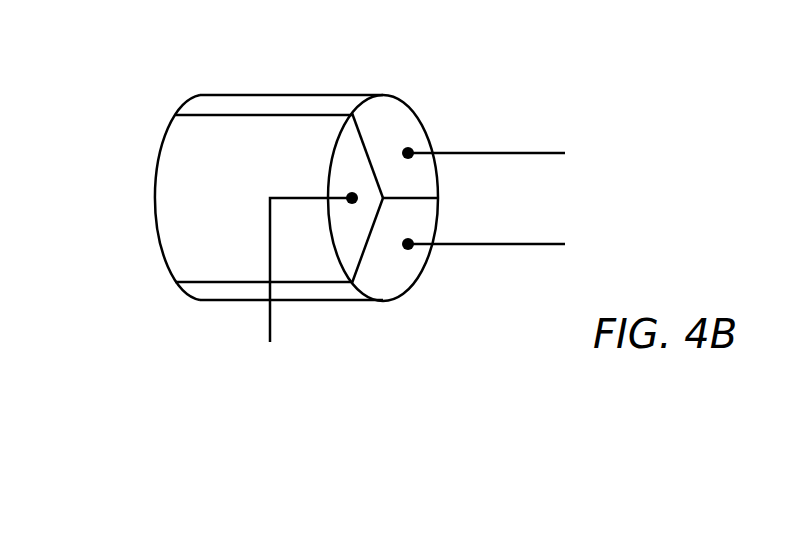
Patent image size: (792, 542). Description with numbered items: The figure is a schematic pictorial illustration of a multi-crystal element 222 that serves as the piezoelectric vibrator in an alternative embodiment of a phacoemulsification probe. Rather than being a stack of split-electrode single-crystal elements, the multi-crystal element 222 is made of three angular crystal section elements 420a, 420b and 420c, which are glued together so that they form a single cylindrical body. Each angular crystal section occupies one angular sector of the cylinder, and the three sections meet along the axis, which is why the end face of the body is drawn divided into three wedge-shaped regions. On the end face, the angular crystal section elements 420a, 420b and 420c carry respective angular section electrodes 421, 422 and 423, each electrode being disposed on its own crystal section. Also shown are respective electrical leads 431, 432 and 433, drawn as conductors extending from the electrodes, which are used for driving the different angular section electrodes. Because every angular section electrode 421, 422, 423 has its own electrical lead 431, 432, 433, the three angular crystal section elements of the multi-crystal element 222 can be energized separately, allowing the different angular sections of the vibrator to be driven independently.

The multi-crystal element 222 is at (643, 183).
The angular crystal section element 420a is at (270, 102).
The angular crystal section element 420b is at (323, 295).
The angular crystal section element 420c is at (157, 215).
The angular section electrode 421 is at (401, 112).
The angular section electrode 422 is at (408, 275).
The angular section electrode 423 is at (338, 162).
The electrical lead 431 is at (532, 151).
The electrical lead 432 is at (538, 246).
The electrical lead 433 is at (268, 322).